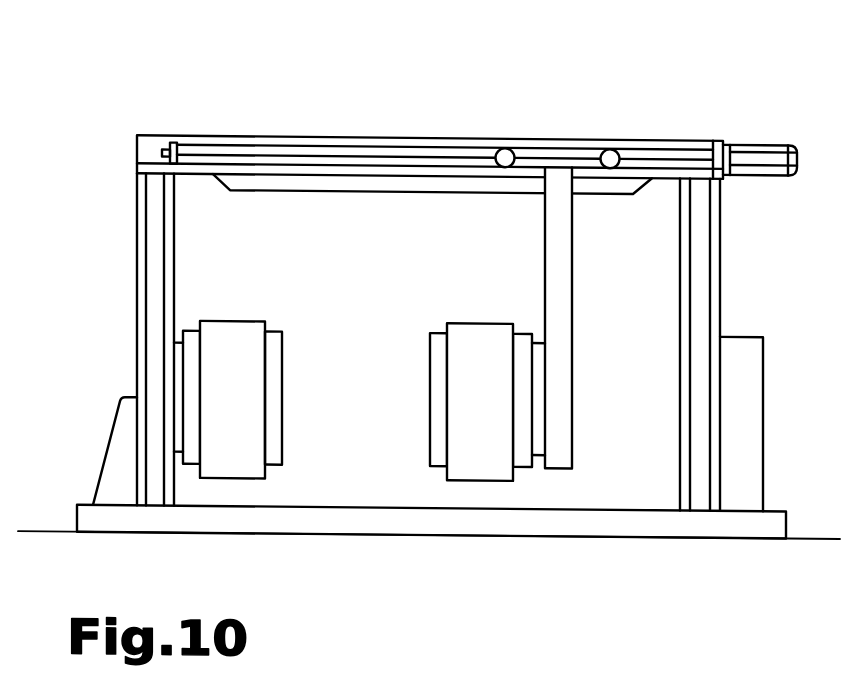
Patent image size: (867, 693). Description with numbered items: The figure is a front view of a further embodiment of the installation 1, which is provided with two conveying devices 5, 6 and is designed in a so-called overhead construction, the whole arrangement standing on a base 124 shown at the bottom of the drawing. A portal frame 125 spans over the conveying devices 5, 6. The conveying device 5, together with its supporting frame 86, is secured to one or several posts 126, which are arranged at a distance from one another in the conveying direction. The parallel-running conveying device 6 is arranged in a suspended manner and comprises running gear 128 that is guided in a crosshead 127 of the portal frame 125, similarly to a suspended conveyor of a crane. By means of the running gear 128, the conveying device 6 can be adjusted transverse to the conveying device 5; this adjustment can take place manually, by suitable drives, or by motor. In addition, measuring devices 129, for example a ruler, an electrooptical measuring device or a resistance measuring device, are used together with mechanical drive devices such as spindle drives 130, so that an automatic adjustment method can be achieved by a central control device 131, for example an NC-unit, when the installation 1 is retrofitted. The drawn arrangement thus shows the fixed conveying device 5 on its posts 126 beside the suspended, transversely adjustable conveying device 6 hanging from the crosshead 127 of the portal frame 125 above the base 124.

The installation 1 is at (381, 274).
The conveying device 5 is at (268, 357).
The conveying device 6 is at (487, 300).
The supporting frame 86 is at (295, 378).
The base plate 124 is at (524, 517).
The portal frame 125 is at (675, 140).
The post 126 is at (155, 281).
The crosshead 127 is at (267, 139).
The running gear 128 is at (553, 133).
The measuring device 129 is at (411, 198).
The spindle drive 130 is at (795, 101).
The central control device 131 is at (752, 396).